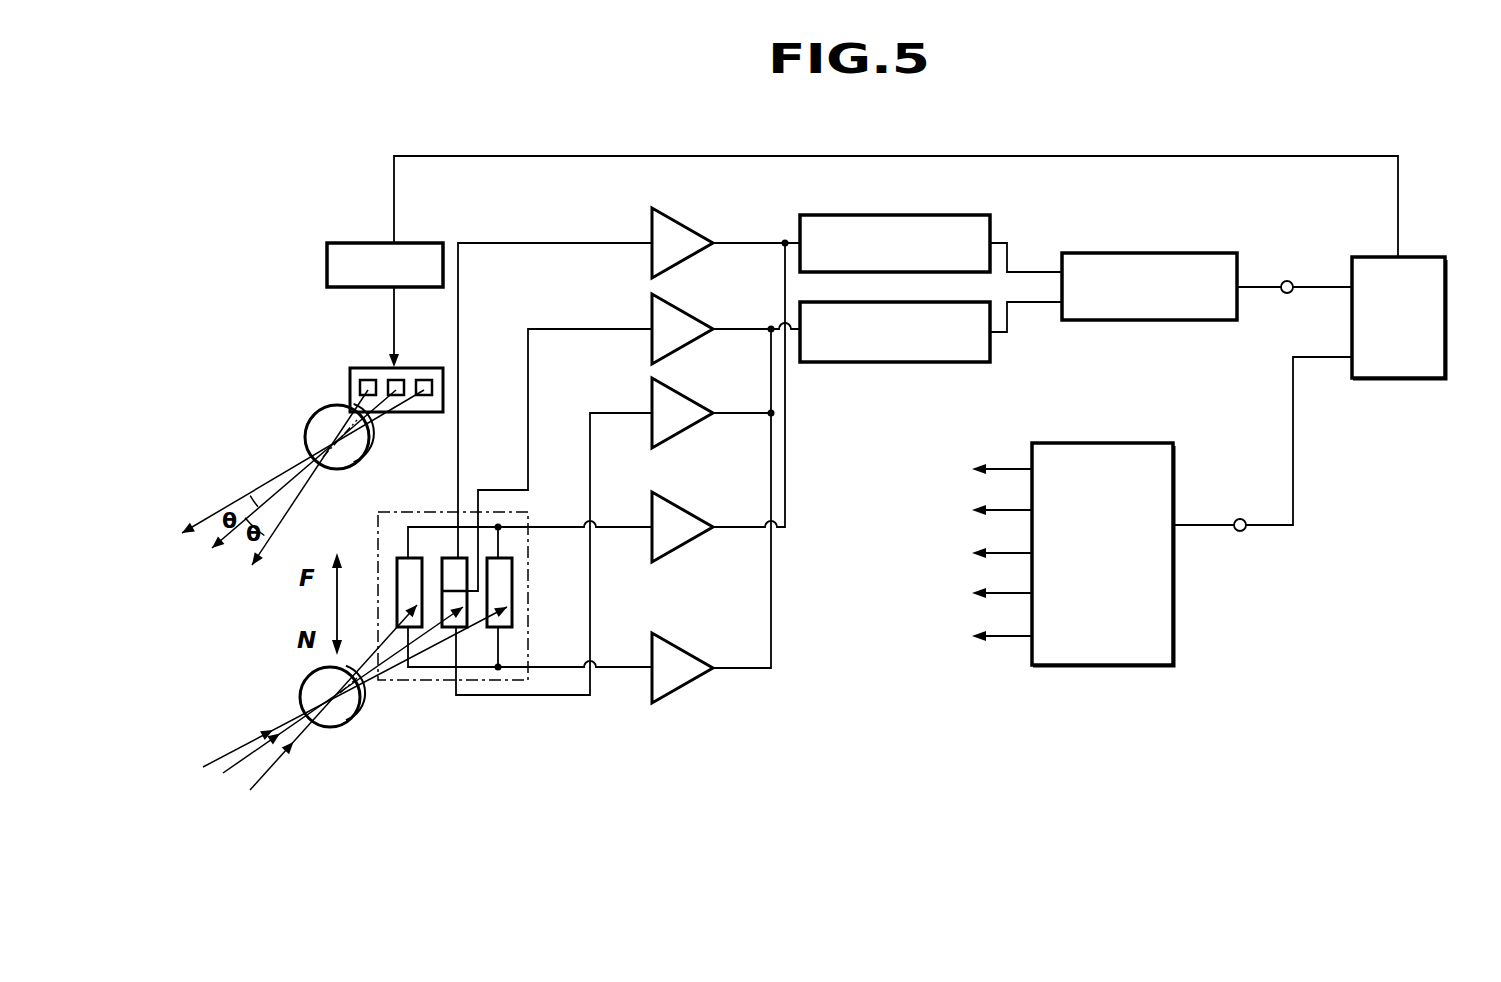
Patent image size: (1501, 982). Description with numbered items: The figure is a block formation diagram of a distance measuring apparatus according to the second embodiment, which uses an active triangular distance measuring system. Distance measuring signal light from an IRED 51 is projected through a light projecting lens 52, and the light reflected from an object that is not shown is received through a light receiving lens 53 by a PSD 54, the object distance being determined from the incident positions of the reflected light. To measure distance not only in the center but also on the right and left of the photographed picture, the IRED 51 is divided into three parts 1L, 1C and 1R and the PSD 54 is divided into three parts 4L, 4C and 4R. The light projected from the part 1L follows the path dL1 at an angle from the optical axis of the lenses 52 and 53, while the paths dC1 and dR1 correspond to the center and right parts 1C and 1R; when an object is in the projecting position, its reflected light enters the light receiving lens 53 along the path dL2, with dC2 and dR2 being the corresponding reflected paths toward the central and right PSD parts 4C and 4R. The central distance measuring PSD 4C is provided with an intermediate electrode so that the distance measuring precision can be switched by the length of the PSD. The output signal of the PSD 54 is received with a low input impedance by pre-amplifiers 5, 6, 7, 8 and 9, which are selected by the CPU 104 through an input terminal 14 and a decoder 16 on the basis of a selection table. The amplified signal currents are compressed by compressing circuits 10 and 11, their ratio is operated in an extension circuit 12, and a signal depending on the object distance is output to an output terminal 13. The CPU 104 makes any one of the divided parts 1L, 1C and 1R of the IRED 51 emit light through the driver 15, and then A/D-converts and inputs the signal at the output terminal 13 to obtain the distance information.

The driver 15 is at (352, 243).
The IRED 51 is at (357, 368).
The left IRED part 1L is at (360, 388).
The center IRED part 1C is at (396, 373).
The right IRED part 1R is at (424, 398).
The light projecting lens 52 is at (310, 430).
The light receiving lens 53 is at (305, 692).
The PSD 54 is at (400, 682).
The left PSD part 4L is at (405, 568).
The central distance measuring PSD 4C is at (455, 575).
The right PSD part 4R is at (500, 583).
The amplifier 5 is at (700, 236).
The amplifier 6 is at (698, 322).
The amplifier 7 is at (700, 410).
The amplifier 8 is at (698, 508).
The amplifier 9 is at (698, 650).
The compressing circuit 10 is at (955, 215).
The compressing circuit 11 is at (890, 362).
The extension circuit 12 is at (1165, 253).
The output terminal 13 is at (1287, 281).
The input terminal 14 is at (1240, 519).
The decoder 16 is at (1055, 443).
The CPU 104 is at (1425, 257).
The right distance measuring light path dR1 is at (240, 498).
The center distance measuring light path dC1 is at (237, 545).
The left distance measuring light path dL1 is at (295, 485).
The right reflected light path dR2 is at (232, 752).
The center reflected light path dC2 is at (240, 765).
The left reflected light path dL2 is at (265, 772).